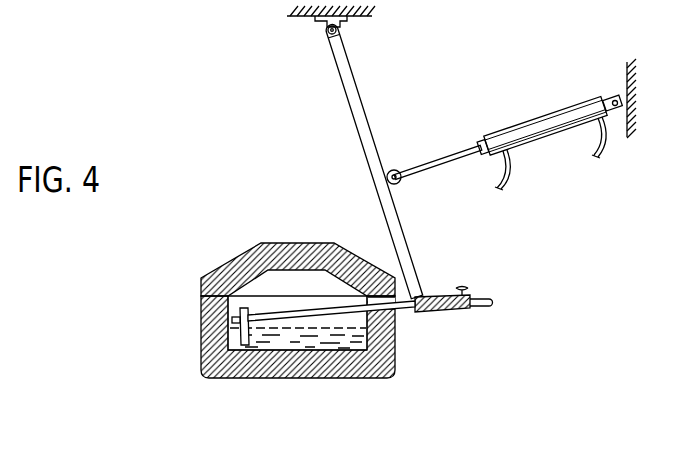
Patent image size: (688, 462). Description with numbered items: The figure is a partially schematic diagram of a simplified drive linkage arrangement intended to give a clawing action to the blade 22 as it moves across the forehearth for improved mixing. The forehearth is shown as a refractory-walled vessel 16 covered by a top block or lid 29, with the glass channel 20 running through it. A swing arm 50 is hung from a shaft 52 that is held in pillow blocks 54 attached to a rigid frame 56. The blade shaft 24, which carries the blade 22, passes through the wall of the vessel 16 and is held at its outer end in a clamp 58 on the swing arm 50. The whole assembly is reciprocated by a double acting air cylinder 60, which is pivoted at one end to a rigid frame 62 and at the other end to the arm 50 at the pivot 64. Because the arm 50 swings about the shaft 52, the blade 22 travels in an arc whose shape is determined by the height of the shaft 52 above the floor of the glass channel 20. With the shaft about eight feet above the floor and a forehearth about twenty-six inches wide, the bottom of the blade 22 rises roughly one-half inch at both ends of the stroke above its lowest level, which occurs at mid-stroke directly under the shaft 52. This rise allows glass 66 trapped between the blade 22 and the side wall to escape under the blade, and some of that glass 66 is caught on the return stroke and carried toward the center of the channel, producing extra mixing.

The vessel base 16 is at (326, 367).
The glass channel 20 is at (287, 343).
The blade 22 is at (232, 330).
The blade shaft 24 is at (324, 310).
The lid 29 is at (288, 252).
The swing arm 50 is at (358, 127).
The shaft 52 is at (341, 33).
The pillow blocks 54 is at (326, 29).
The rigid frame 56 is at (362, 19).
The clamp 58 is at (438, 297).
The double acting air cylinder 60 is at (531, 128).
The rigid frame 62 is at (624, 91).
The pivot 64 is at (397, 171).
The glass 66 is at (233, 340).